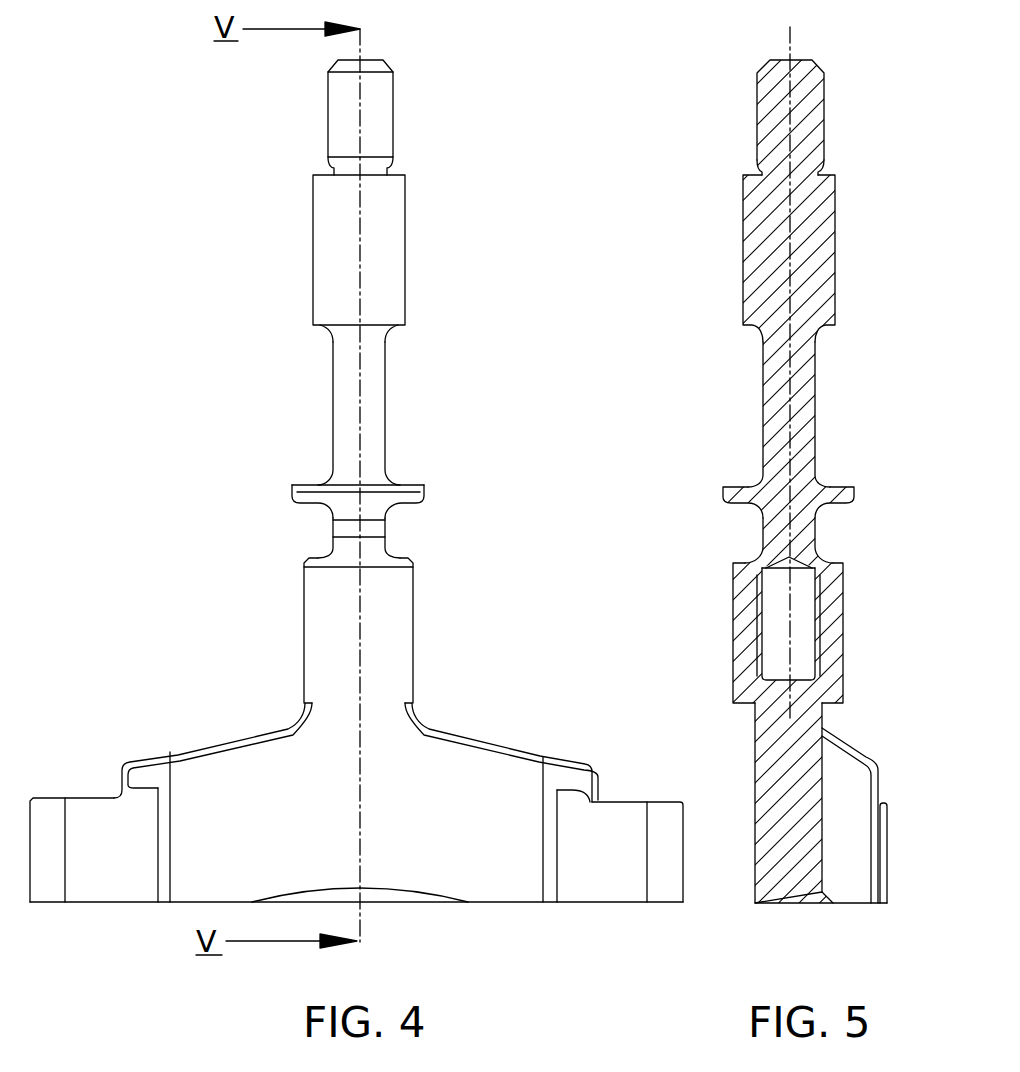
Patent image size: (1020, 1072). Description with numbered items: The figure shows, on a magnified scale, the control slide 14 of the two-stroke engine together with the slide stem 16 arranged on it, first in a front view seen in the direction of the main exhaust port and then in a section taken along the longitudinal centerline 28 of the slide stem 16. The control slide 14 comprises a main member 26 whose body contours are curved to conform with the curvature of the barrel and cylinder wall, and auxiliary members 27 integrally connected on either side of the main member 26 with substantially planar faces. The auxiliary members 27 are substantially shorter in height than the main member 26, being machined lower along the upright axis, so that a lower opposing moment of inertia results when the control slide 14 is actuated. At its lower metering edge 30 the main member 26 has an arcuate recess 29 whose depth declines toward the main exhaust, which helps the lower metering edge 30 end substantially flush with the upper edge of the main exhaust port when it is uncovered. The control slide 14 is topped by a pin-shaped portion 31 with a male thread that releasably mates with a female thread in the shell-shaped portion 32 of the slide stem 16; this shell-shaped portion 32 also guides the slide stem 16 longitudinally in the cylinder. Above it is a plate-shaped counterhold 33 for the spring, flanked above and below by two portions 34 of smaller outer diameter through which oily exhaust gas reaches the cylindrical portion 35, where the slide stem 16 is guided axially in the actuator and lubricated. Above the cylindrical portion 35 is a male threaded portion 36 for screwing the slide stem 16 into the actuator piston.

In FIG. 4, the control slide 14 is at (453, 930).
In FIG. 5, the control slide 14 is at (768, 905).
In FIG. 4, the slide stem 16 is at (240, 345).
In FIG. 4, the main member 26 is at (490, 760).
In FIG. 5, the main member 26 is at (850, 815).
In FIG. 4, the auxiliary members 27 is at (92, 812).
In FIG. 5, the auxiliary members 27 is at (883, 853).
In FIG. 5, the longitudinal centerline 28 is at (795, 40).
In FIG. 4, the arcuate recess 29 is at (410, 905).
In FIG. 5, the arcuate recess 29 is at (812, 905).
In FIG. 4, the lower metering edge 30 is at (517, 905).
In FIG. 5, the pin-shaped portion 31 is at (755, 604).
In FIG. 4, the shell-shaped portion 32 is at (408, 628).
In FIG. 5, the shell-shaped portion 32 is at (835, 627).
In FIG. 4, the plate-shaped counterhold 33 is at (413, 490).
In FIG. 5, the plate-shaped counterhold 33 is at (845, 490).
In FIG. 4, the portions having a smaller outer diameter 34 is at (380, 391).
In FIG. 5, the portions having a smaller outer diameter 34 is at (808, 392).
In FIG. 4, the cylindrical portion 35 is at (392, 240).
In FIG. 5, the cylindrical portion 35 is at (822, 238).
In FIG. 4, the male threaded portion 36 is at (382, 110).
In FIG. 5, the male threaded portion 36 is at (812, 110).